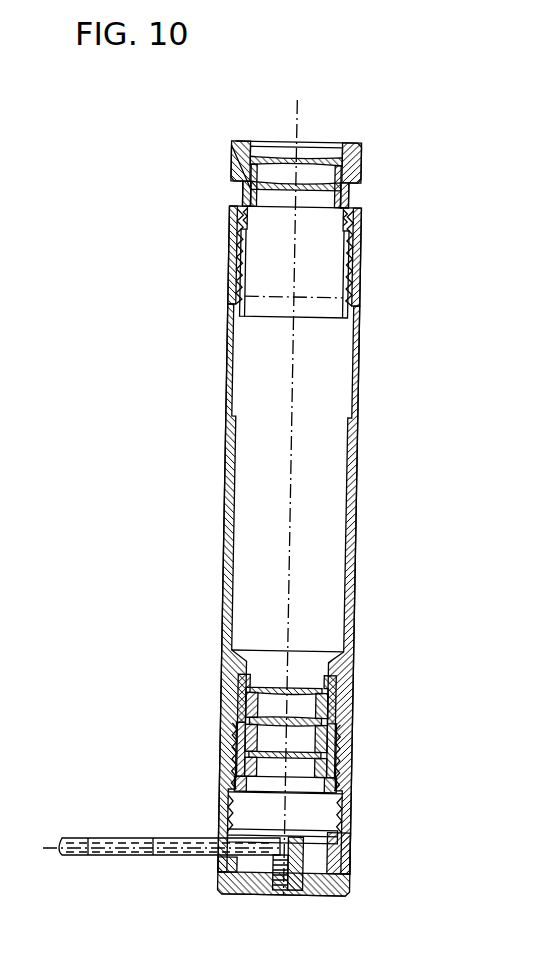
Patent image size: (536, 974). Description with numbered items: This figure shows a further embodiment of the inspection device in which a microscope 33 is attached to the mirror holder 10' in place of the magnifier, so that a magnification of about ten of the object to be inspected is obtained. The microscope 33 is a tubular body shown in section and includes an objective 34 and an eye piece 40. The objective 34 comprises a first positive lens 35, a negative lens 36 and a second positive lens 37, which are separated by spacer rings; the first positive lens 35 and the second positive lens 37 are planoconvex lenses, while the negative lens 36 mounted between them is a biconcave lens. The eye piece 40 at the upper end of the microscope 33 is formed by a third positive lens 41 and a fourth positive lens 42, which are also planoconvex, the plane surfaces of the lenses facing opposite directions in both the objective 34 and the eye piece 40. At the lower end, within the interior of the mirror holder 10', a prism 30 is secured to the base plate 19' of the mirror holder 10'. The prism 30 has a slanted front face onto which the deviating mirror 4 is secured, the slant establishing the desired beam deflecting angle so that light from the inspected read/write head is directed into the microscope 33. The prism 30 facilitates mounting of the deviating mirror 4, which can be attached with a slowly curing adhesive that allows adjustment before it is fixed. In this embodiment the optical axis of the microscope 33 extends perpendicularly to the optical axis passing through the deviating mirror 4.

The deviating mirror 4 is at (296, 837).
The mirror holder 10' is at (161, 825).
The base plate 19' is at (310, 914).
The prism 30 is at (304, 858).
The microscope 33 is at (356, 456).
The objective 34 is at (326, 680).
The first positive lens 35 is at (271, 750).
The negative lens 36 is at (273, 722).
The second positive lens 37 is at (275, 683).
The eye piece 40 is at (356, 163).
The third positive lens 41 is at (262, 180).
The fourth positive lens 42 is at (266, 156).